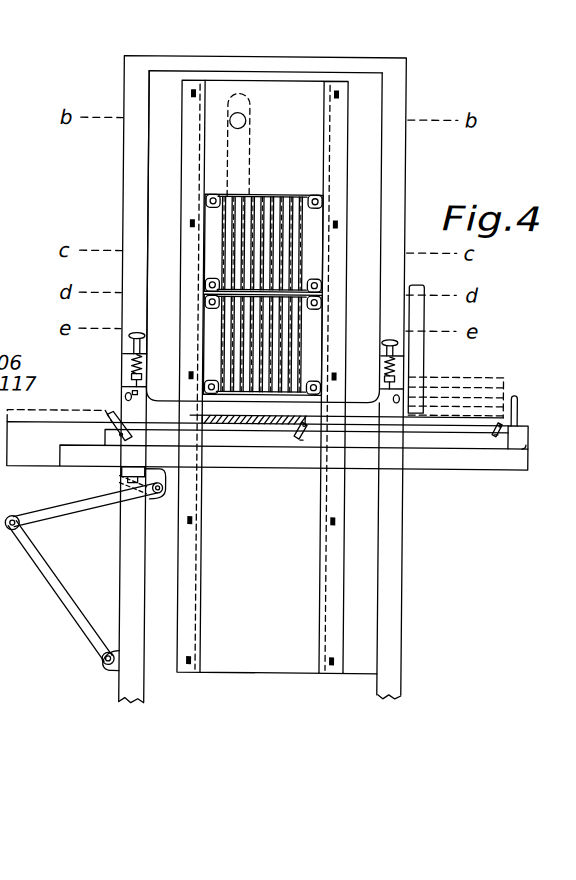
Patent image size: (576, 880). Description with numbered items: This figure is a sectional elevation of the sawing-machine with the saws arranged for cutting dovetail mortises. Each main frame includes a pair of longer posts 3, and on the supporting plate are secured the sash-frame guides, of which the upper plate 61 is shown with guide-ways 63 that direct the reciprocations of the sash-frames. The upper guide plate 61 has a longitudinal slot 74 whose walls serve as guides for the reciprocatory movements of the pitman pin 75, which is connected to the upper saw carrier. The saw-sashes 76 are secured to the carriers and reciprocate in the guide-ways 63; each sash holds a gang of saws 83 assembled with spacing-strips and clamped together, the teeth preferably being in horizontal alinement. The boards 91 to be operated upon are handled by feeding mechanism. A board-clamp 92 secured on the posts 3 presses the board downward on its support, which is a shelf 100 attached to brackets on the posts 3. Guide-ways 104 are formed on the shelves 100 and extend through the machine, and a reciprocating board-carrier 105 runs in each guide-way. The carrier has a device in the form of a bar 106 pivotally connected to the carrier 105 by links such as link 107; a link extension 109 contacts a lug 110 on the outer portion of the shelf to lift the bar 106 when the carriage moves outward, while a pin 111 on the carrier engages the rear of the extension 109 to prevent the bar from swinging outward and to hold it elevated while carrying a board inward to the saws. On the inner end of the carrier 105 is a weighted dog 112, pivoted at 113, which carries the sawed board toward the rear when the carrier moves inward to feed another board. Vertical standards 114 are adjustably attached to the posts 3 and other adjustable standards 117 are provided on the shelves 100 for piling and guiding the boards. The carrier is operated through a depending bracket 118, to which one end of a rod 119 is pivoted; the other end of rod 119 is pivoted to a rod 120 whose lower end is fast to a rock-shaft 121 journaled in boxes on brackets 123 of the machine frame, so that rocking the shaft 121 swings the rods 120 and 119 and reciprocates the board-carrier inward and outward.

The longer posts 3 is at (134, 703).
The upper plate 61 is at (305, 172).
The guide-ways 63 is at (320, 643).
The longitudinal slot 74 is at (255, 158).
The pitman pin 75 is at (244, 121).
The saw-sashes 76 is at (305, 238).
The saws 83 is at (300, 213).
The boards 91 is at (252, 425).
The board-clamp 92 is at (112, 416).
The shelf 100 is at (527, 430).
The guide-ways 104 is at (517, 450).
The reciprocating board-carrier 105 is at (447, 440).
The carrier bar 106 is at (498, 432).
The link 107 is at (507, 440).
The link extension 109 is at (303, 440).
The lug 110 is at (527, 448).
The pin 111 is at (300, 440).
The dog 112 is at (107, 424).
The pivot 113 is at (120, 443).
The vertical standards 114 is at (412, 297).
The adjustable standards 117 is at (514, 402).
The depending bracket 118 is at (150, 493).
The rod 119 is at (44, 512).
The rod 120 is at (63, 590).
The rock-shaft 121 is at (100, 665).
The brackets 123 is at (110, 673).